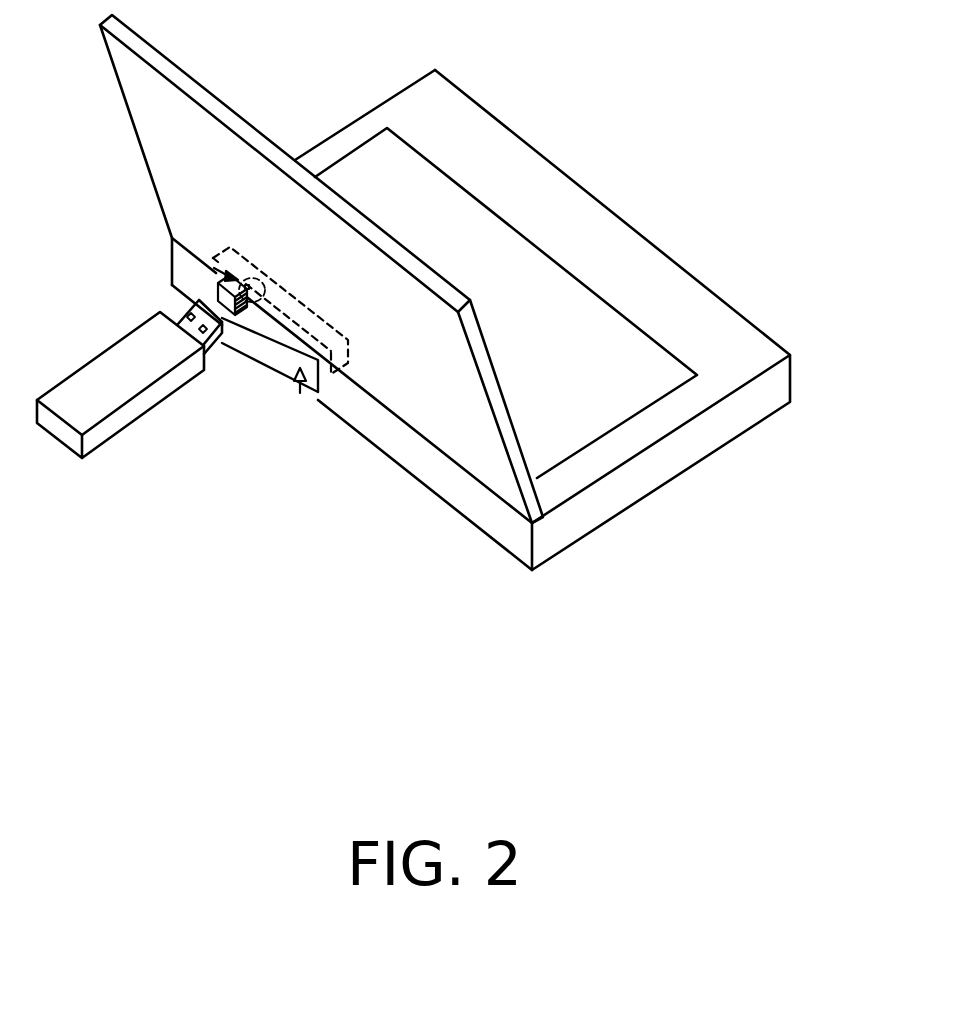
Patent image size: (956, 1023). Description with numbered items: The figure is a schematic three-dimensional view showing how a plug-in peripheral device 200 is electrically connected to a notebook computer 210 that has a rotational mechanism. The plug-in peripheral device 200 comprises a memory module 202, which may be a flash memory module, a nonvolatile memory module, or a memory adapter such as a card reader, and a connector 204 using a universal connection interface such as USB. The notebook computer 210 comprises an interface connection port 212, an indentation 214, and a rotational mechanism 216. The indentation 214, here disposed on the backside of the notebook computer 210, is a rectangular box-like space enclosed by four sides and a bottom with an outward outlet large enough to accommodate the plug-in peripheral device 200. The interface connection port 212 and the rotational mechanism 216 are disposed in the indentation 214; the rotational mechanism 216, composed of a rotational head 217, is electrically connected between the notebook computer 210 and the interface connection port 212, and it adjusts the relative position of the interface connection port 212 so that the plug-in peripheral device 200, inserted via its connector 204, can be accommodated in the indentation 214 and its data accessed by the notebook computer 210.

The plug-in peripheral device 200 is at (133, 452).
The memory module 202 is at (90, 410).
The connector 204 is at (210, 352).
The notebook computer 210 is at (719, 197).
The interface connection port 212 is at (212, 328).
The indentation 214 is at (300, 390).
The rotational mechanism 216 is at (216, 281).
The rotational head 217 is at (212, 258).